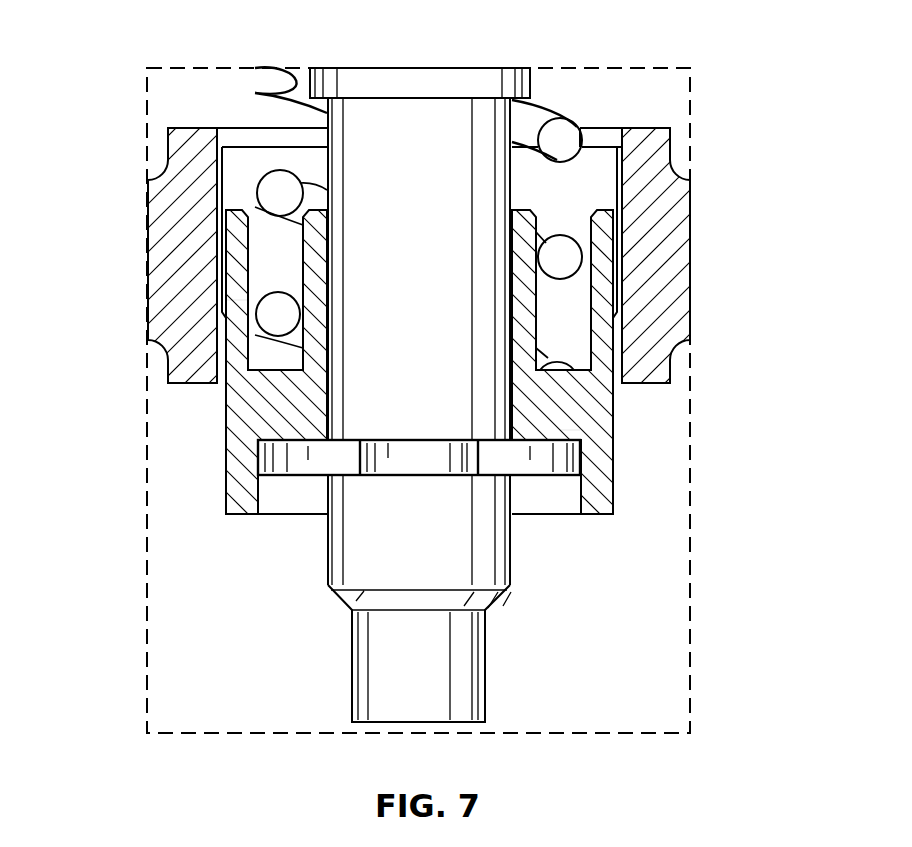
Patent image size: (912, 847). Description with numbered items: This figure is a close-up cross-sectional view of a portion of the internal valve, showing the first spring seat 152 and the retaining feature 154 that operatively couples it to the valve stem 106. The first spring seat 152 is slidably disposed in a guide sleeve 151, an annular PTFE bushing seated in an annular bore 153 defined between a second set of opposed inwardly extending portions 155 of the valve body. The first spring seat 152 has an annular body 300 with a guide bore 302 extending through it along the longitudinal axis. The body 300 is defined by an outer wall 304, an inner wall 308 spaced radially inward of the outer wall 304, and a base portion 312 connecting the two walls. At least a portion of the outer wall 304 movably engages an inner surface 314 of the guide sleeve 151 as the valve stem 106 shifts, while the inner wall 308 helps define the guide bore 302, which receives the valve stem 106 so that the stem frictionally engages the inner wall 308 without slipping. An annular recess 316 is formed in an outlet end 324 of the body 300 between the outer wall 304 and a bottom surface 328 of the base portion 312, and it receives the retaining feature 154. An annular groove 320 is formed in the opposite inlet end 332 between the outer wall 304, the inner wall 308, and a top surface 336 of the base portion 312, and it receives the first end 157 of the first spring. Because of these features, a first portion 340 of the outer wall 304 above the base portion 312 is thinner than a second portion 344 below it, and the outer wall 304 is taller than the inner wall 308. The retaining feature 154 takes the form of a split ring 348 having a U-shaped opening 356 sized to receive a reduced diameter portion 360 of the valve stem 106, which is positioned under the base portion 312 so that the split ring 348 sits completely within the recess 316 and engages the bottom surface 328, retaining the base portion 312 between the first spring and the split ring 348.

The valve stem 106 is at (512, 500).
The guide sleeve 151 is at (318, 232).
The annular bore 153 is at (205, 242).
The first spring seat 152 is at (726, 456).
The annular body 300 is at (641, 443).
The retaining feature 154 is at (421, 540).
The split ring 348 is at (376, 478).
The inwardly extending portions 155 is at (178, 212).
The first end of the spring 157 is at (246, 346).
The guide bore 302 is at (513, 312).
The outer wall 304 is at (617, 405).
The inner wall 308 is at (513, 408).
The base portion 312 is at (273, 412).
The inner surface 314 is at (222, 276).
The annular recess 316 is at (285, 500).
The annular groove 320 is at (260, 246).
The outlet end 324 is at (600, 517).
The bottom surface 328 is at (567, 438).
The inlet end 332 is at (603, 207).
The top surface 336 is at (590, 368).
The first portion of the outer wall 340 is at (624, 253).
The second portion of the outer wall 344 is at (210, 468).
The U-shaped opening 356 is at (421, 540).
The reduced diameter portion 360 is at (421, 540).